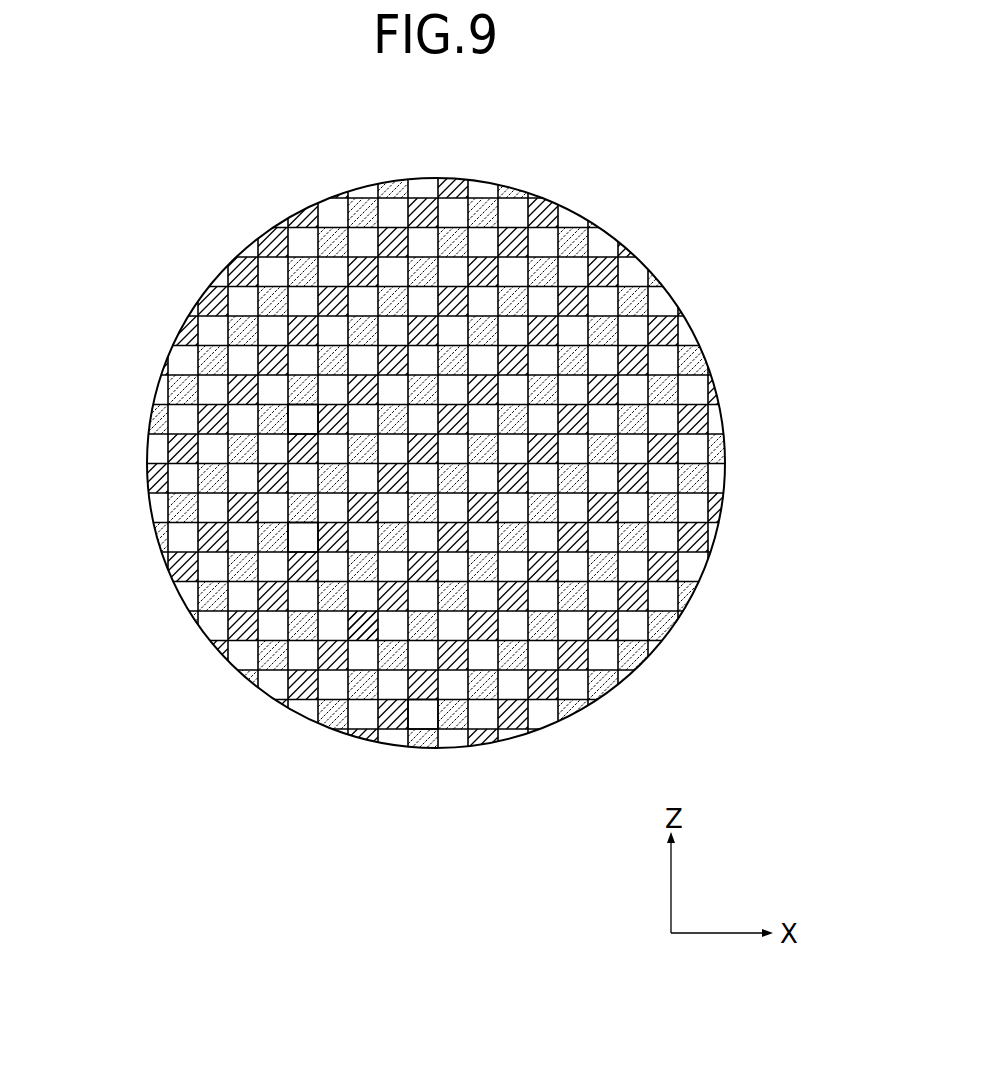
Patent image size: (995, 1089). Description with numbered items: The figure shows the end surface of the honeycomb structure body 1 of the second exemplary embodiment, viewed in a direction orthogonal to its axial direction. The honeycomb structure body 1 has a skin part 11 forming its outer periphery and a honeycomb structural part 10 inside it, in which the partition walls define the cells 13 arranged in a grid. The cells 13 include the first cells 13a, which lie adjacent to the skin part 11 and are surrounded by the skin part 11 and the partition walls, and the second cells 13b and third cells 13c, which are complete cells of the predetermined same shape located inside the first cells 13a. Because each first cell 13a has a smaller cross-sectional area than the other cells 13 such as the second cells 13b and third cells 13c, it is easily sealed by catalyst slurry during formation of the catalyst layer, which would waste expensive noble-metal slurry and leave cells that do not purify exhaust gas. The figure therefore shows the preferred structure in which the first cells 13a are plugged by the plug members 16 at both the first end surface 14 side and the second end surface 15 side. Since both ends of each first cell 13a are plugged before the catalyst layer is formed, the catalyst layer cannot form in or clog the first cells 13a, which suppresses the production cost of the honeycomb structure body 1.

The honeycomb structure body 1 is at (447, 481).
The honeycomb structural part 10 is at (447, 486).
The skin part 11 is at (643, 665).
The cells 13 is at (444, 486).
The first cells 13a is at (337, 212).
The second cells 13b is at (422, 715).
The third cells 13c is at (303, 422).
The first end surface 14 is at (189, 613).
The second end surface 15 is at (302, 533).
The plug members 16 is at (362, 623).